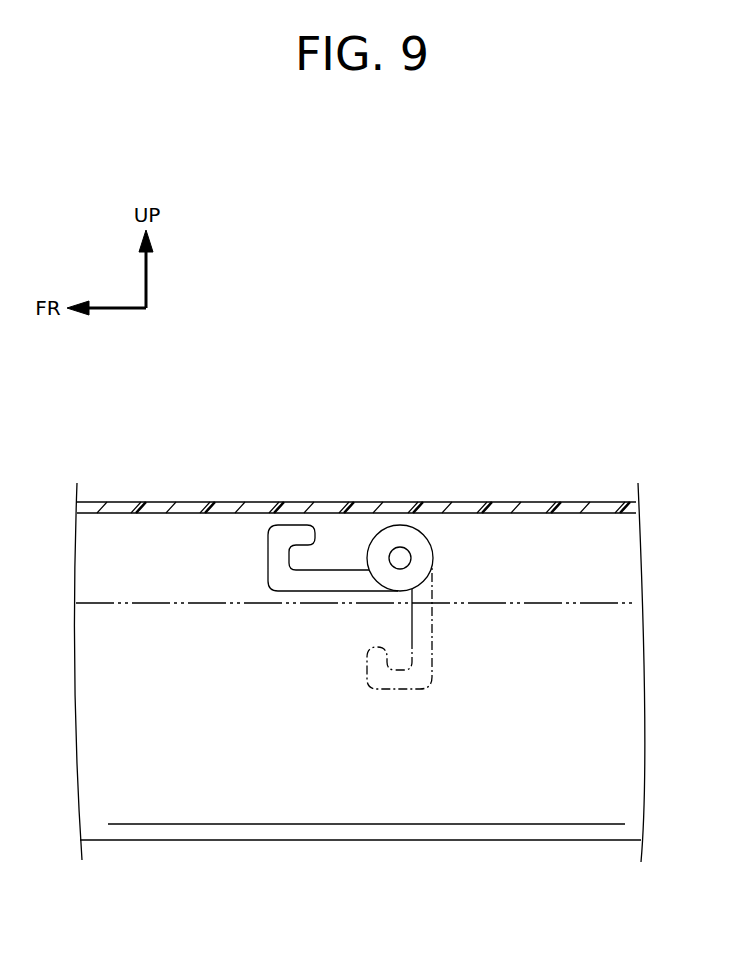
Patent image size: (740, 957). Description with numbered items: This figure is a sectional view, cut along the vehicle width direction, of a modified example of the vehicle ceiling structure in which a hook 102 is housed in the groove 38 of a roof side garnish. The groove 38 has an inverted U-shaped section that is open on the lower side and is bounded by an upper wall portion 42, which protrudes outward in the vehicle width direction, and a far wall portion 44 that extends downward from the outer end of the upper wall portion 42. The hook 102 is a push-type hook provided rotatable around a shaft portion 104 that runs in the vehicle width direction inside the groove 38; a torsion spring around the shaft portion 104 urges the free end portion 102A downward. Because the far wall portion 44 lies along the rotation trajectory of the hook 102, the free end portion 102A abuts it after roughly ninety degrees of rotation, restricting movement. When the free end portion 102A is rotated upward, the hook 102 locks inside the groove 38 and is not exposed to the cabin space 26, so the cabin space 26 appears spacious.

The cabin space 26 is at (503, 793).
The groove 38 is at (593, 516).
The upper wall portion 42 is at (468, 506).
The far wall portion 44 is at (547, 583).
The hook 102 is at (328, 604).
The free end portion 102A is at (322, 593).
The shaft portion 104 is at (399, 547).